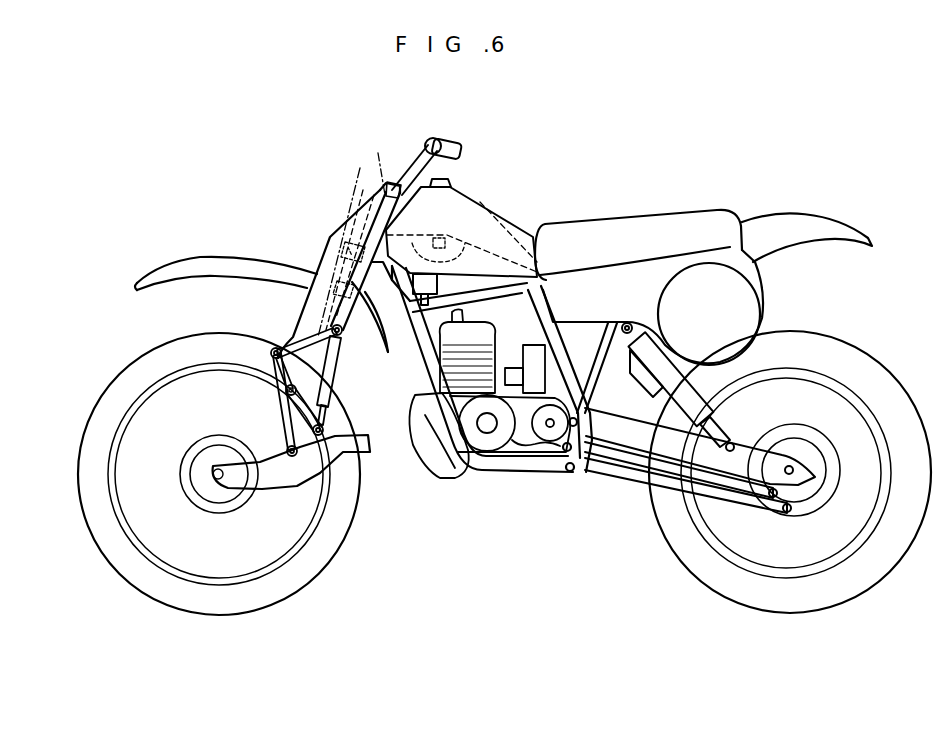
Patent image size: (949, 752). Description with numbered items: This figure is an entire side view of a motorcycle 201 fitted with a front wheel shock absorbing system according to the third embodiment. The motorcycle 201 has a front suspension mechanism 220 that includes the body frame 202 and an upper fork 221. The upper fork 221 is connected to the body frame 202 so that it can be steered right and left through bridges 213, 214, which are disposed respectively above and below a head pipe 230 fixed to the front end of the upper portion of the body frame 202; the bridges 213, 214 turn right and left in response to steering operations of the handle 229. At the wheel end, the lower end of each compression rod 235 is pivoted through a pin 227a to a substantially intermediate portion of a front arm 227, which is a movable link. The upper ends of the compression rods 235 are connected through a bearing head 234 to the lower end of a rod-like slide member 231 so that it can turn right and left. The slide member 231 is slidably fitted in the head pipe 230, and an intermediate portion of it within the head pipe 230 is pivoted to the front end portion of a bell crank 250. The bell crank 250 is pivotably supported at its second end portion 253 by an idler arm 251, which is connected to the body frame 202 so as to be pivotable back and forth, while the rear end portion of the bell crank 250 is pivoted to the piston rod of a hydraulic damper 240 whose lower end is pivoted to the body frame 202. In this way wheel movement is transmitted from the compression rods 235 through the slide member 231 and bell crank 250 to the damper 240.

The motorcycle 201 is at (588, 208).
The body frame 202 is at (474, 478).
The bridge 213 is at (375, 162).
The bridge 214 is at (348, 247).
The front suspension mechanism 220 is at (315, 247).
The upper fork 221 is at (293, 337).
The front arm 227 is at (281, 420).
The pin 227a is at (283, 390).
The handle 229 is at (452, 138).
The head pipe 230 is at (368, 222).
The slide member 231 is at (362, 217).
The bearing head 234 is at (270, 260).
The compression rod 235 is at (314, 364).
The hydraulic damper 240 is at (447, 265).
The bell crank 250 is at (413, 243).
The idler arm 251 is at (420, 300).
The second end portion 253 is at (310, 354).